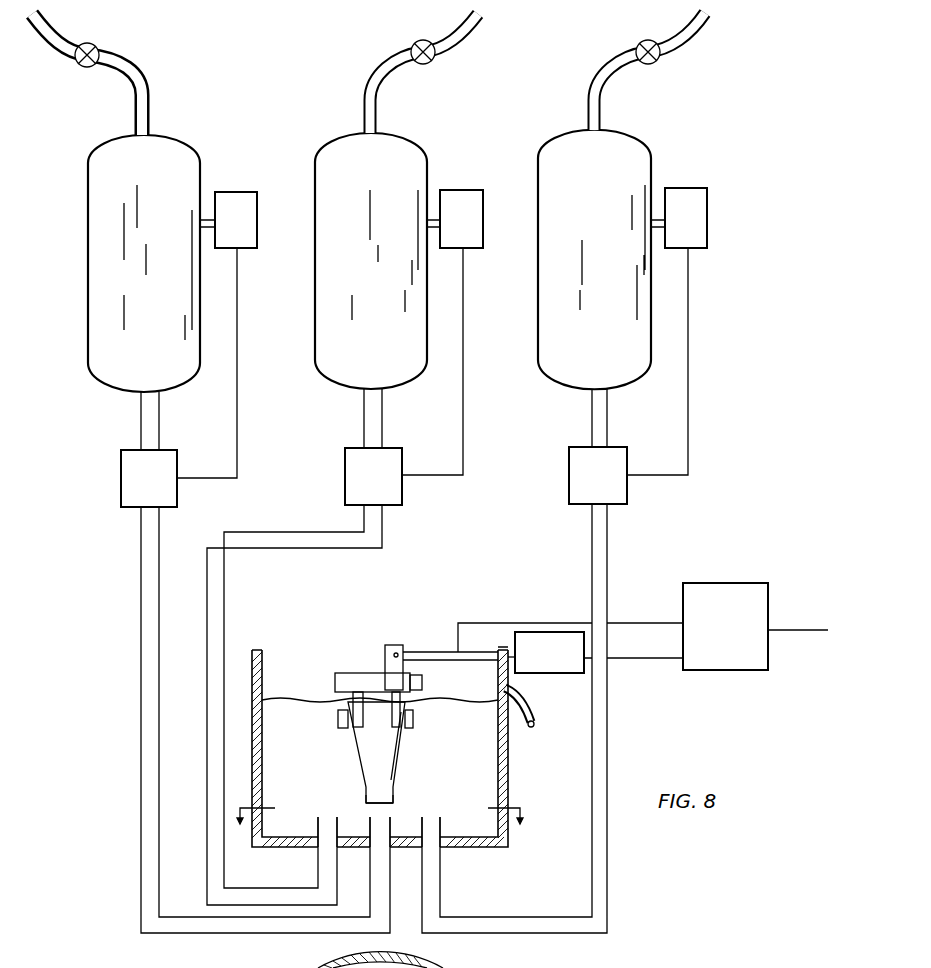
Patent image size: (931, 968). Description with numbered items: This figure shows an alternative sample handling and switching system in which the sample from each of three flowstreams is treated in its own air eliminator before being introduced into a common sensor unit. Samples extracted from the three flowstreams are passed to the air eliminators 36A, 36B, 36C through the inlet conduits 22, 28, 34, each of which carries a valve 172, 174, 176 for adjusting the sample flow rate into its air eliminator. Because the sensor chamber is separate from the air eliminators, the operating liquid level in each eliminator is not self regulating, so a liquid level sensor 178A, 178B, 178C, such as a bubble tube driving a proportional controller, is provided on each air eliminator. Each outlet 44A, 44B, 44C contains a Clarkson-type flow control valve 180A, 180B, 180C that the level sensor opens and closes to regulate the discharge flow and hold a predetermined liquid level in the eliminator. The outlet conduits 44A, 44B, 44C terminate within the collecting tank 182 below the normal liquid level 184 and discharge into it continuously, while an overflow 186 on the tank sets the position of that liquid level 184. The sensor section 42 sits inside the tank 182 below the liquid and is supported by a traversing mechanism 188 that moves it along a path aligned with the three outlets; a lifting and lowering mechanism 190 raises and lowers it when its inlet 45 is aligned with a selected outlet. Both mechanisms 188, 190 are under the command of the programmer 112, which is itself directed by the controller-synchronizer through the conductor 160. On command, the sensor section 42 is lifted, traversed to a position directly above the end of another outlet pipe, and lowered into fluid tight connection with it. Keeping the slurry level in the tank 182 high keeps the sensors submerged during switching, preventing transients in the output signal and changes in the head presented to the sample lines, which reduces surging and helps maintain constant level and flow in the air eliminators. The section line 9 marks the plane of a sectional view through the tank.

The conduit 22 is at (141, 85).
The conduit 28 is at (377, 72).
The conduit 34 is at (601, 73).
The valve 172 is at (98, 47).
The valve 174 is at (435, 62).
The valve 176 is at (660, 60).
The air eliminator 36A is at (88, 290).
The air eliminator 36B is at (315, 280).
The air eliminator 36C is at (538, 277).
The liquid level sensor 178A is at (236, 193).
The liquid level sensor 178B is at (462, 190).
The liquid level sensor 178C is at (687, 188).
The outlet conduit 44A is at (160, 427).
The outlet conduit 44B is at (377, 425).
The outlet conduit 44C is at (607, 421).
The flow control valve 180A is at (120, 504).
The flow control valve 180B is at (345, 471).
The flow control valve 180C is at (569, 471).
The programmer 112 is at (737, 583).
The conductor 160 is at (805, 630).
The tank 182 is at (472, 847).
The liquid level 184 is at (298, 703).
The overflow 186 is at (538, 718).
The traversing mechanism 188 is at (558, 673).
The lifting and lowering mechanism 190 is at (400, 645).
The sensor section 42 is at (400, 757).
The inlet 45 is at (395, 797).
The section line 9- 9 is at (380, 831).